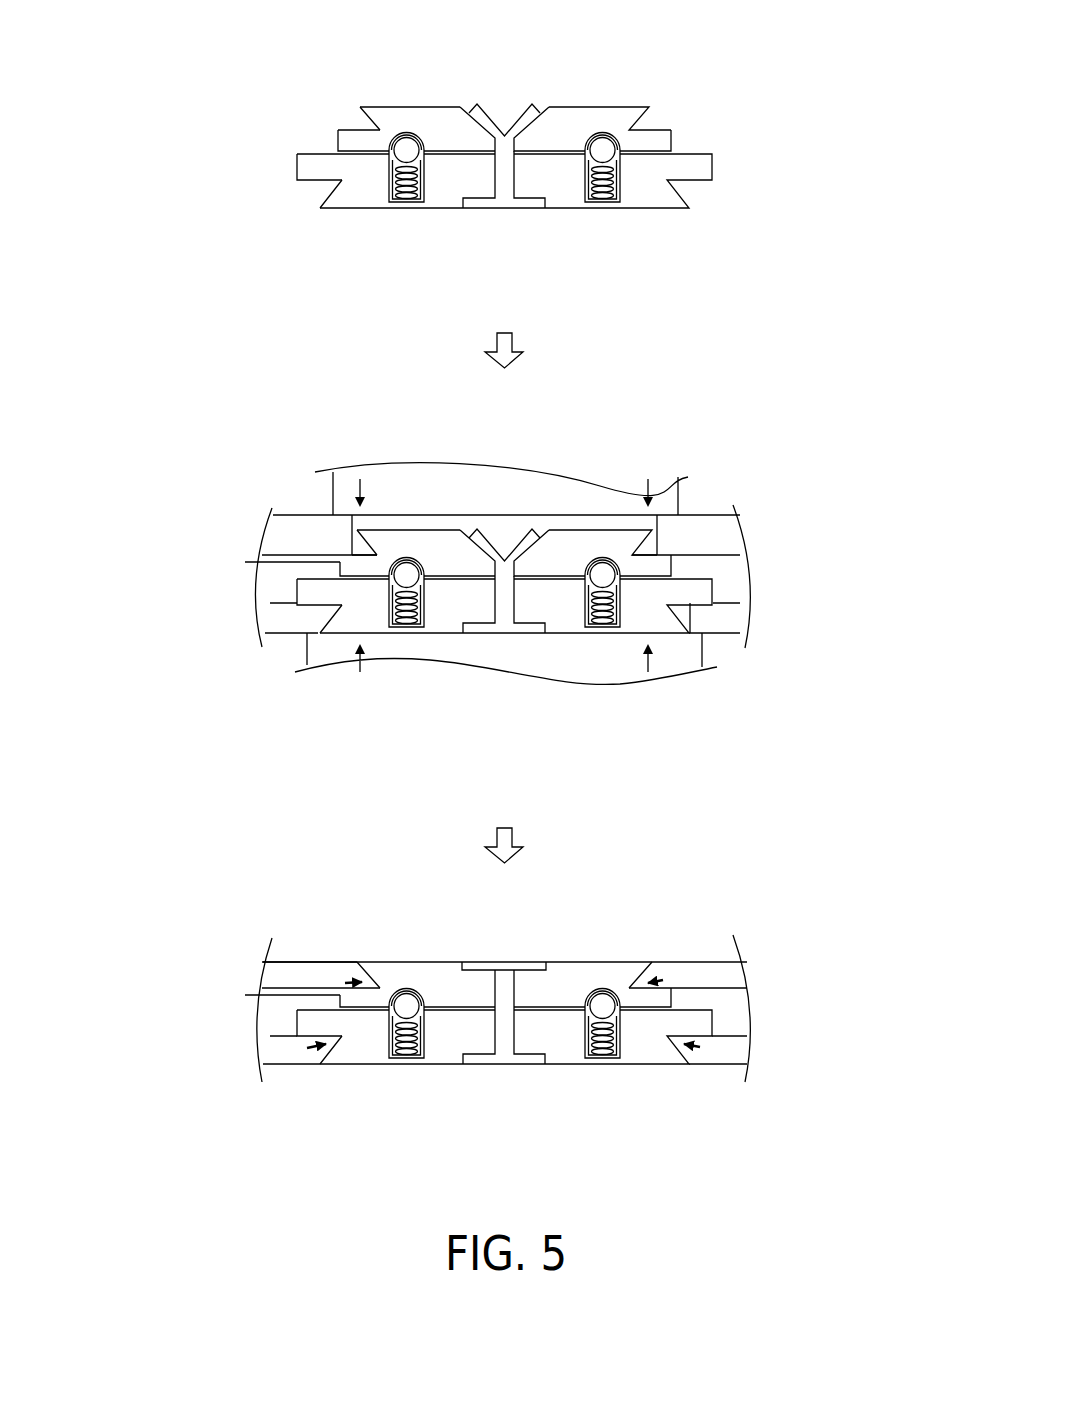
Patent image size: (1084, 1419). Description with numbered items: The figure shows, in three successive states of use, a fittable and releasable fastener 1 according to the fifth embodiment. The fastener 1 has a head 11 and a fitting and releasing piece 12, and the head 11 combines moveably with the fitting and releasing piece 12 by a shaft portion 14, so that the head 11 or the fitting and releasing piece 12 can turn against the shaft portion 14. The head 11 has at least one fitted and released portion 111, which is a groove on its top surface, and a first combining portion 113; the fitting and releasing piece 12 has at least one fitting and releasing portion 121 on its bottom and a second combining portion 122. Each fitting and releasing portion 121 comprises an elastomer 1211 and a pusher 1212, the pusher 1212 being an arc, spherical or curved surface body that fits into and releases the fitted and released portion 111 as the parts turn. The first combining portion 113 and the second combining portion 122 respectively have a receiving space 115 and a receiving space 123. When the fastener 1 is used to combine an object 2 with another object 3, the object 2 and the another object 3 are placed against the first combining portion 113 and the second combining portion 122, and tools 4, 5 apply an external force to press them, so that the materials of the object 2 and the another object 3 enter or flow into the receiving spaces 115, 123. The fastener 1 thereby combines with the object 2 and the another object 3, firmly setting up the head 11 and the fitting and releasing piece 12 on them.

The fittable and releasable fastener 1 is at (332, 32).
The head 11 is at (653, 138).
The fitting and releasing piece 12 is at (692, 163).
The shaft portion 14 is at (502, 198).
The fitted and released portion 111 is at (600, 135).
The first combining portion 113 is at (388, 122).
The receiving space 115 is at (353, 118).
The fitting and releasing portion 121 is at (553, 650).
The elastomer 1211 is at (593, 203).
The pusher 1212 is at (607, 158).
The second combining portion 122 is at (345, 197).
The receiving space 123 is at (308, 195).
The object 2 is at (707, 535).
The another object 3 is at (727, 615).
The tool 4 is at (667, 503).
The tool 5 is at (403, 645).